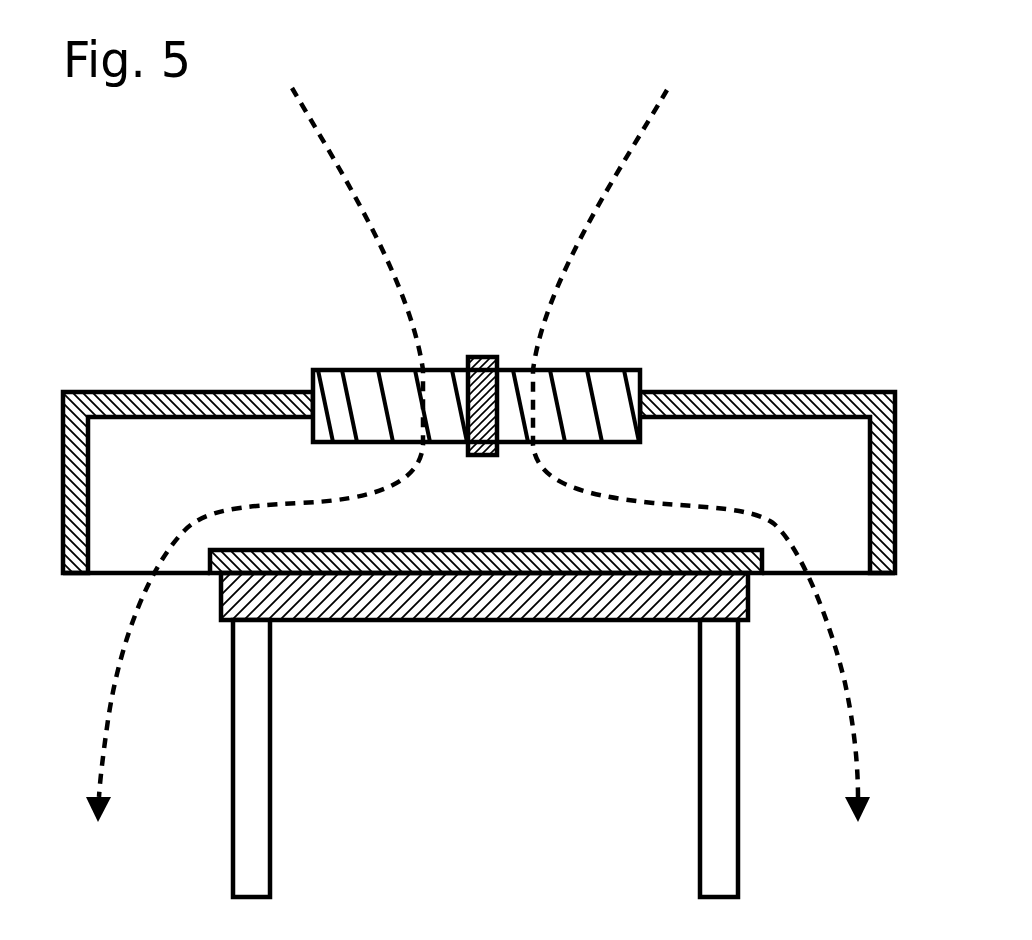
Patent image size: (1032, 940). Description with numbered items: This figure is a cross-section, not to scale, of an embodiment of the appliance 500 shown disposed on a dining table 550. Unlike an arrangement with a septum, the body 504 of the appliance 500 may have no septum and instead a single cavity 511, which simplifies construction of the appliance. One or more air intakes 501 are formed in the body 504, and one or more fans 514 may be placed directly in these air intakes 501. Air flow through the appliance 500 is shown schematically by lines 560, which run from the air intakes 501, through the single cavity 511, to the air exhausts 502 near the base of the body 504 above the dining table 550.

The appliance 500 is at (468, 399).
The air intake 501 is at (472, 322).
The air exhaust 502 is at (122, 575).
The body 504 is at (835, 392).
The cavity 511 is at (265, 478).
The fan 514 is at (605, 365).
The dining table 550 is at (500, 628).
The air flow lines 560 is at (478, 436).